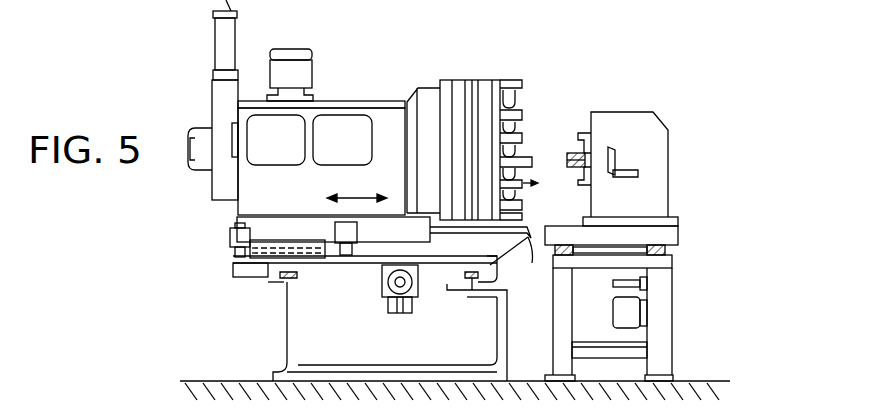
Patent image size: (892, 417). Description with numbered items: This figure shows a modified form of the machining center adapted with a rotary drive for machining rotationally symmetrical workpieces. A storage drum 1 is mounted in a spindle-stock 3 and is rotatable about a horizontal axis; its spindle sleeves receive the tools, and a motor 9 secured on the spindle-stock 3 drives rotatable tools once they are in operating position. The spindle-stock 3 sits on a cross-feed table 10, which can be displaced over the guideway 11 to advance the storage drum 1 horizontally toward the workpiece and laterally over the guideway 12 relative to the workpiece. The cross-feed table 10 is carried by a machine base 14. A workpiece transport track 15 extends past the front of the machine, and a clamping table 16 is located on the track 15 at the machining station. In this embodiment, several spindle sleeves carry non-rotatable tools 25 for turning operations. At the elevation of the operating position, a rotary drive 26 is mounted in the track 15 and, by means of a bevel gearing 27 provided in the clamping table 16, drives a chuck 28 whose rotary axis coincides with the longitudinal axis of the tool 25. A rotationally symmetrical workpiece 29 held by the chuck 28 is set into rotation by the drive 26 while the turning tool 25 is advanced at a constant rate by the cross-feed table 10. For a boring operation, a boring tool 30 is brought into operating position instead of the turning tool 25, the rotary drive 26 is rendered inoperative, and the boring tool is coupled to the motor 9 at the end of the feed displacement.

The storage drum 1 is at (458, 95).
The spindle-stock 3 is at (362, 110).
The motor 9 is at (283, 52).
The cross-feed table 10 is at (230, 248).
The guideway 11 is at (490, 256).
The guideway 12 is at (283, 278).
The machine base 14 is at (300, 323).
The workpiece transport track 15 is at (660, 358).
The clamping table 16 is at (652, 138).
The non-rotatable tool 25 is at (529, 163).
The rotary drive 26 is at (628, 312).
The bevel gearing 27 is at (637, 177).
The chuck 28 is at (590, 137).
The rotationally symmetrical workpiece 29 is at (570, 153).
The boring tool 30 is at (513, 80).